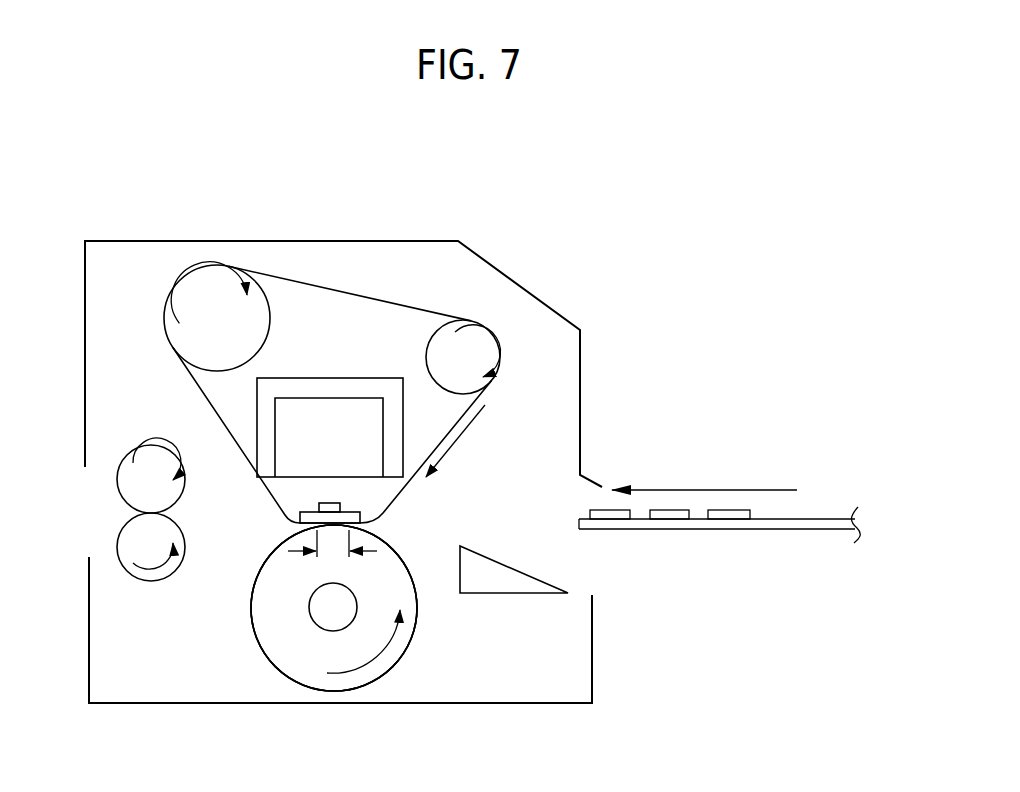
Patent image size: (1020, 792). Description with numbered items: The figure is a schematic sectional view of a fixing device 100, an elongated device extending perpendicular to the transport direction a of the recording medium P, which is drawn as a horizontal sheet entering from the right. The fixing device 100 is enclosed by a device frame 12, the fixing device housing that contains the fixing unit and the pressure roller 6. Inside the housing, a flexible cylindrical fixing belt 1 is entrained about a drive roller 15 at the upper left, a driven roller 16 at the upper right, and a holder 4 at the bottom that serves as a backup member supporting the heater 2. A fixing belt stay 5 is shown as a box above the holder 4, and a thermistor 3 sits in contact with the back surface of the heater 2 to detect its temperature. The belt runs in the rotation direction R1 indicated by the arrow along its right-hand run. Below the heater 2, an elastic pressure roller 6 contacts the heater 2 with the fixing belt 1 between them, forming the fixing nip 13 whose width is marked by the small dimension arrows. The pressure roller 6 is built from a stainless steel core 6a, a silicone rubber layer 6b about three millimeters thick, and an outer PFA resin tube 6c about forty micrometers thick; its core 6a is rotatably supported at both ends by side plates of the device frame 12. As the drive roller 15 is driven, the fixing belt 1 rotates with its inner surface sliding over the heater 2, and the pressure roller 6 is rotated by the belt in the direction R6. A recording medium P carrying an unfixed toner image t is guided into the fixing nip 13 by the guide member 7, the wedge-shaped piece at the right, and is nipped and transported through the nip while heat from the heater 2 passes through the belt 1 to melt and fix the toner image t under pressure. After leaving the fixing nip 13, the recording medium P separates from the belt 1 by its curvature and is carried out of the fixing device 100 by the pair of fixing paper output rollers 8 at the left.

The fixing device 100 is at (131, 230).
The fixing belt 1 is at (365, 296).
The drive roller 15 is at (255, 336).
The driven roller 16 is at (440, 354).
The rotation direction of belt R1 is at (455, 451).
The fixing belt stay 5 is at (332, 378).
The thermistor 3 is at (330, 503).
The holder 4 is at (362, 495).
The heater 2 is at (385, 514).
The fixing nip 13 is at (330, 555).
The pressure roller 6 is at (410, 638).
The core 6a is at (330, 620).
The silicone rubber layer 6b is at (263, 615).
The PFA resin tube 6c is at (270, 660).
The rotation direction of transfer roller R6 is at (367, 628).
The fixing paper output rollers 8 is at (148, 566).
The guide member 7 is at (487, 582).
The device frame 12 is at (535, 704).
The recording medium P is at (653, 530).
The unfixed toner image t is at (735, 508).
The transport direction a is at (704, 477).